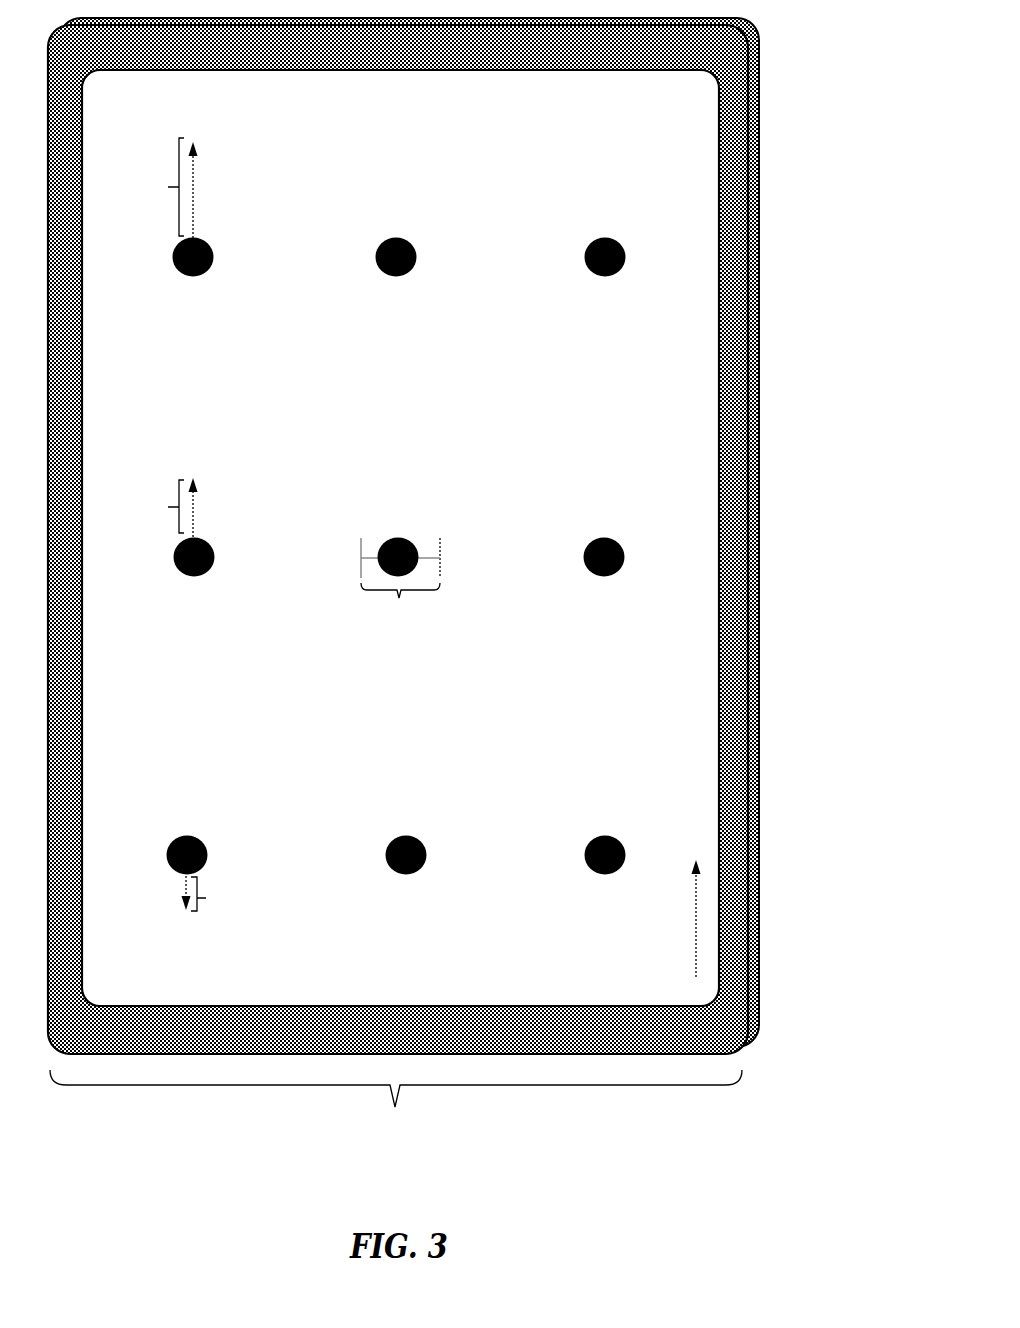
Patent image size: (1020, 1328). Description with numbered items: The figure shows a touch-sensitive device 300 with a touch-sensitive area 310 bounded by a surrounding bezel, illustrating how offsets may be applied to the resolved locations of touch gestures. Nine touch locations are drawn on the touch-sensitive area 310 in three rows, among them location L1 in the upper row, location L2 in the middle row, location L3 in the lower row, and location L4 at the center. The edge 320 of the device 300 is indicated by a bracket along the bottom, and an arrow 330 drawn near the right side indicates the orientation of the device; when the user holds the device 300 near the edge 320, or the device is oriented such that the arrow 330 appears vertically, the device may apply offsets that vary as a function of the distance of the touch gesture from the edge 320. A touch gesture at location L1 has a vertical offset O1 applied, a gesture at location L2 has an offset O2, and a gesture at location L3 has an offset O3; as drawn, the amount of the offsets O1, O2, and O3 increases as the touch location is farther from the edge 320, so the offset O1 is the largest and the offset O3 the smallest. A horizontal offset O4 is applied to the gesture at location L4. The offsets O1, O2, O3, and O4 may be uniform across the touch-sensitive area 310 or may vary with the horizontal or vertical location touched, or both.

The device 300 is at (728, 52).
The touch-sensitive area 310 is at (692, 168).
The edge 320 is at (396, 1110).
The arrow 330 is at (708, 927).
The location L1 is at (172, 278).
The location L2 is at (167, 580).
The location L3 is at (219, 829).
The location L4 is at (398, 524).
The vertical offset O1 is at (164, 188).
The offset O2 is at (165, 507).
The offset O3 is at (214, 895).
The horizontal offset O4 is at (400, 584).